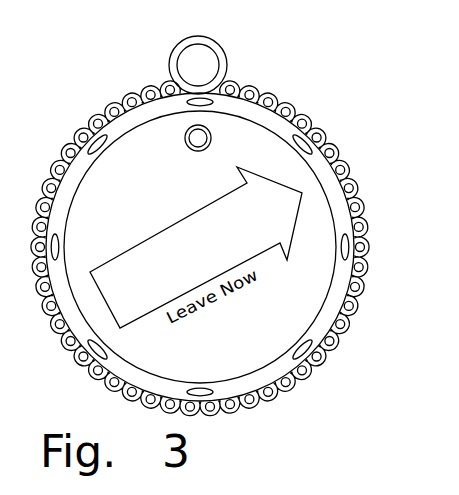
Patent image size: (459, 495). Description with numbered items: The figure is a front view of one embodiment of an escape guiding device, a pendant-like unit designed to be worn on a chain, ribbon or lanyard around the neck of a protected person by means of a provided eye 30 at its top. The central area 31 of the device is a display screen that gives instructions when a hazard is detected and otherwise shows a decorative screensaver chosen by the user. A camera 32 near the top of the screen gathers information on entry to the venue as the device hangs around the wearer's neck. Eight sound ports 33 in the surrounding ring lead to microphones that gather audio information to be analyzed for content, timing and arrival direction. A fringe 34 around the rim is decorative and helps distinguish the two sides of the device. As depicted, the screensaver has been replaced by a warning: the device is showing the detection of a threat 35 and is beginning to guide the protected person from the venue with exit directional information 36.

The eye 30 is at (224, 48).
The central area 31 is at (268, 130).
The camera 32 is at (187, 130).
The sound ports 33 is at (327, 145).
The fringe 34 is at (72, 142).
The threat 35 is at (132, 273).
The exit directional information 36 is at (258, 254).